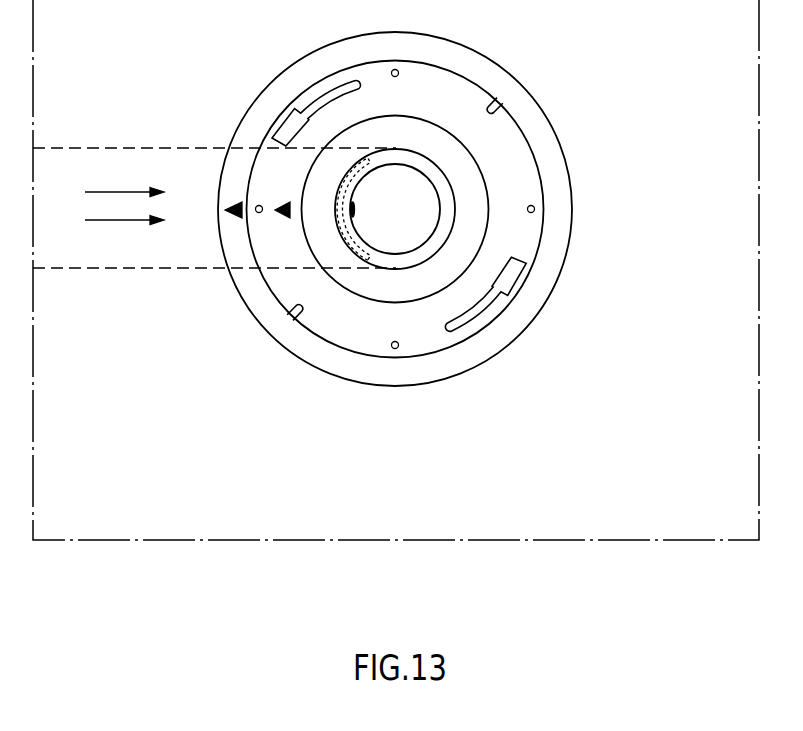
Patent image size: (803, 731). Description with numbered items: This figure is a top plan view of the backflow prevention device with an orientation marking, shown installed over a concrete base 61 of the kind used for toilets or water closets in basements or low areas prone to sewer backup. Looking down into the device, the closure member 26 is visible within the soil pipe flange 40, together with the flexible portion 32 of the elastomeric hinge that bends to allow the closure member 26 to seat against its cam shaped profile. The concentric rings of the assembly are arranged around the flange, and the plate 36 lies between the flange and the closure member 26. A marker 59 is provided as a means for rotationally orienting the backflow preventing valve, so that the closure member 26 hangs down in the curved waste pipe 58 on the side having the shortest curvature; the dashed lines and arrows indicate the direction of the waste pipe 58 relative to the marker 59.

The closure member 26 is at (353, 195).
The flexible portion 32 is at (354, 210).
The plate 36 is at (463, 240).
The soil pipe flange 40 is at (515, 158).
The waste pipe 58 is at (150, 247).
The marker 59 is at (282, 219).
The concrete base 61 is at (440, 458).